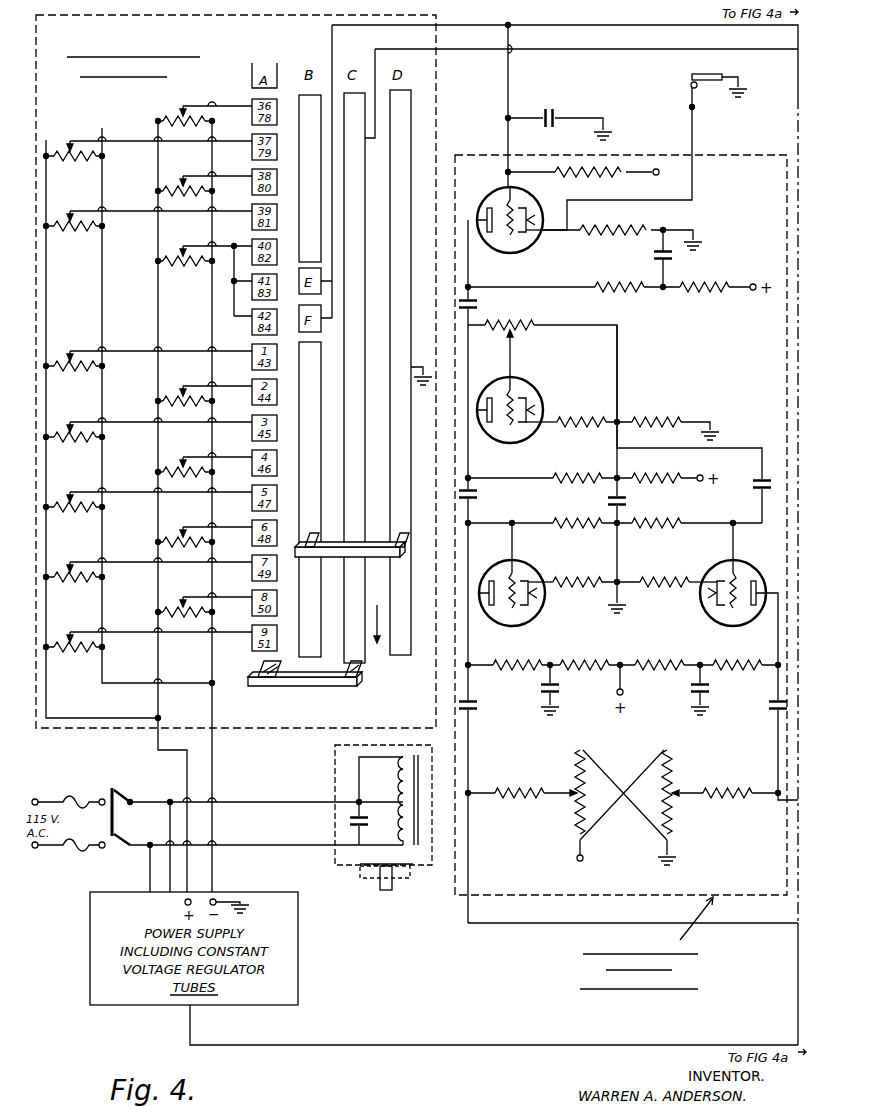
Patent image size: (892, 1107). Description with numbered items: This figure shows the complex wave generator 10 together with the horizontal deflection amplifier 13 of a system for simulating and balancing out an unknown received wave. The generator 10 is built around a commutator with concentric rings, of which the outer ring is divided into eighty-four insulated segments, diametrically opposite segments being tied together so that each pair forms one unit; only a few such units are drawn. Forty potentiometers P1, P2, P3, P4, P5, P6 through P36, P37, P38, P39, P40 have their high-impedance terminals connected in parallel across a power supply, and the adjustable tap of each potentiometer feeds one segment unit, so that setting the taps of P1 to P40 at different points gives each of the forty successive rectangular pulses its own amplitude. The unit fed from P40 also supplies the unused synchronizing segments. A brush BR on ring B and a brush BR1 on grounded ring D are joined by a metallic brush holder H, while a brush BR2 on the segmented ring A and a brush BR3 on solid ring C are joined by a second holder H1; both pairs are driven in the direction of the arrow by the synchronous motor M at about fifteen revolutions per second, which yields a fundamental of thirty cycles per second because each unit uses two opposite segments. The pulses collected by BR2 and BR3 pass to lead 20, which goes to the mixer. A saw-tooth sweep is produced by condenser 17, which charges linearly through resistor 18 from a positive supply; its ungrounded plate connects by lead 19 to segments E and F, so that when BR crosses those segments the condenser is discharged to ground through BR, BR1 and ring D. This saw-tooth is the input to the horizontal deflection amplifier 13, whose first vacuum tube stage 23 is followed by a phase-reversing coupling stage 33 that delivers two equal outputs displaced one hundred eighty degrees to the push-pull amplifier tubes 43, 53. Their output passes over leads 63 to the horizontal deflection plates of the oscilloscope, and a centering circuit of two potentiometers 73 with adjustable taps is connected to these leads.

The complex wave generator 10 is at (36, 113).
The horizontal deflection amplifier 13 is at (743, 167).
The condenser 17 is at (549, 110).
The resistor 18 is at (605, 167).
The lead 19 is at (508, 80).
The lead 20 is at (782, 49).
The first vacuum tube stage 23 is at (492, 181).
The coupling vacuum tube stage 33 is at (495, 366).
The push-pull connected vacuum tube amplifier 43 is at (508, 552).
The push-pull connected vacuum tube amplifier 53 is at (738, 562).
The leads 63 is at (783, 803).
The potentiometers 73 is at (571, 768).
The potentiometer P1 is at (68, 359).
The potentiometer P2 is at (180, 392).
The potentiometer P3 is at (69, 436).
The potentiometer P4 is at (180, 464).
The potentiometer P5 is at (72, 499).
The potentiometer P6 is at (180, 534).
The potentiometer P36 is at (178, 114).
The potentiometer P37 is at (66, 150).
The potentiometer P38 is at (181, 180).
The potentiometer P39 is at (66, 218).
The potentiometer P40 is at (182, 249).
The brush BR is at (312, 539).
The brush BR1 is at (404, 539).
The brush BR2 is at (258, 668).
The brush BR3 is at (365, 672).
The brush holder H is at (354, 540).
The brush holder H1 is at (310, 688).
The motor M is at (420, 812).